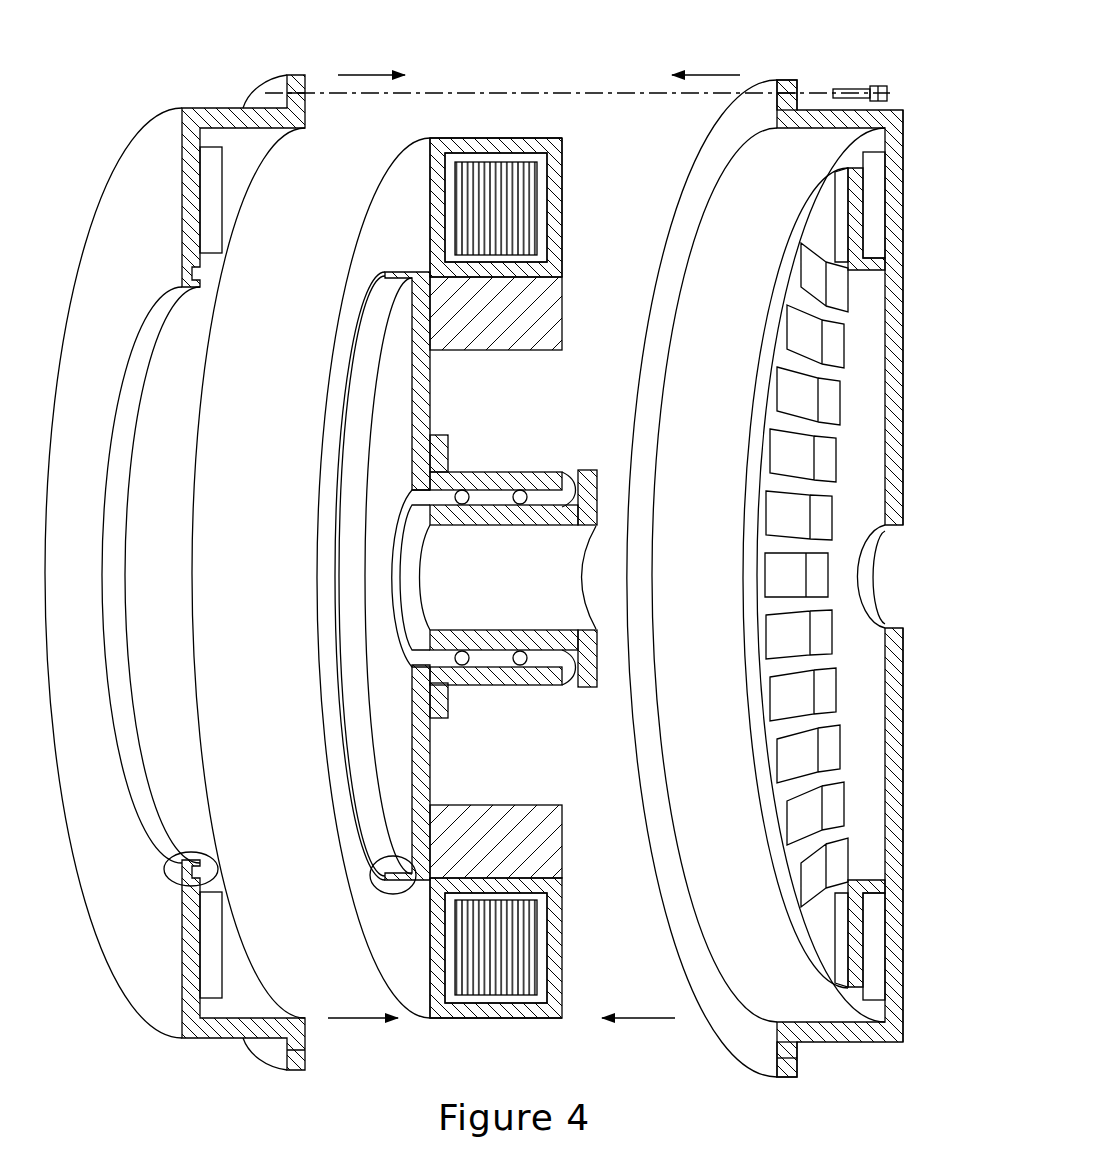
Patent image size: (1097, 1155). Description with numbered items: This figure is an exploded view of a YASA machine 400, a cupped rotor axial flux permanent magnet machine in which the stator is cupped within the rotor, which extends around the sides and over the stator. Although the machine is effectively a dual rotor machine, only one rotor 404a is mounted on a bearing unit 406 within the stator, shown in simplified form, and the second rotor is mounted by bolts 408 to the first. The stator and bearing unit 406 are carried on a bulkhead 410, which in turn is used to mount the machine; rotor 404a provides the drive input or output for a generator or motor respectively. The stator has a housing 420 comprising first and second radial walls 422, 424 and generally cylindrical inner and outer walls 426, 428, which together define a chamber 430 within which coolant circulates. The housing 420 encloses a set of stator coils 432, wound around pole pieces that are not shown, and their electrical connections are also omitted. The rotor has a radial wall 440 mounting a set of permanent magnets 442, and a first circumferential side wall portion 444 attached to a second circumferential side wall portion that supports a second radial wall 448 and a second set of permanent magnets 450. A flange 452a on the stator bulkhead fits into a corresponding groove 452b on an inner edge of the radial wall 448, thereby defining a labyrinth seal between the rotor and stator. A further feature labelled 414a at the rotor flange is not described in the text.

The YASA machine 400 is at (145, 1037).
The rotor 404a is at (875, 1052).
The bearing unit 406 is at (598, 710).
The bolts 408 is at (867, 88).
The bulkhead 410 is at (358, 358).
The housing flange 414a is at (793, 78).
The housing 420 is at (565, 130).
The first radial wall 422 is at (430, 195).
The second radial wall 424 is at (558, 176).
The inner wall 426 is at (555, 300).
The outer wall 428 is at (490, 137).
The chamber 430 is at (548, 226).
The stator coils 432 is at (472, 233).
The radial wall 440 is at (903, 352).
The permanent magnets 442 is at (873, 246).
The first circumferential wall portion 444 is at (782, 1074).
The second radial wall 448 is at (106, 228).
The second set of permanent magnets 450 is at (212, 233).
The flange 452a is at (378, 871).
The groove 452b is at (212, 852).